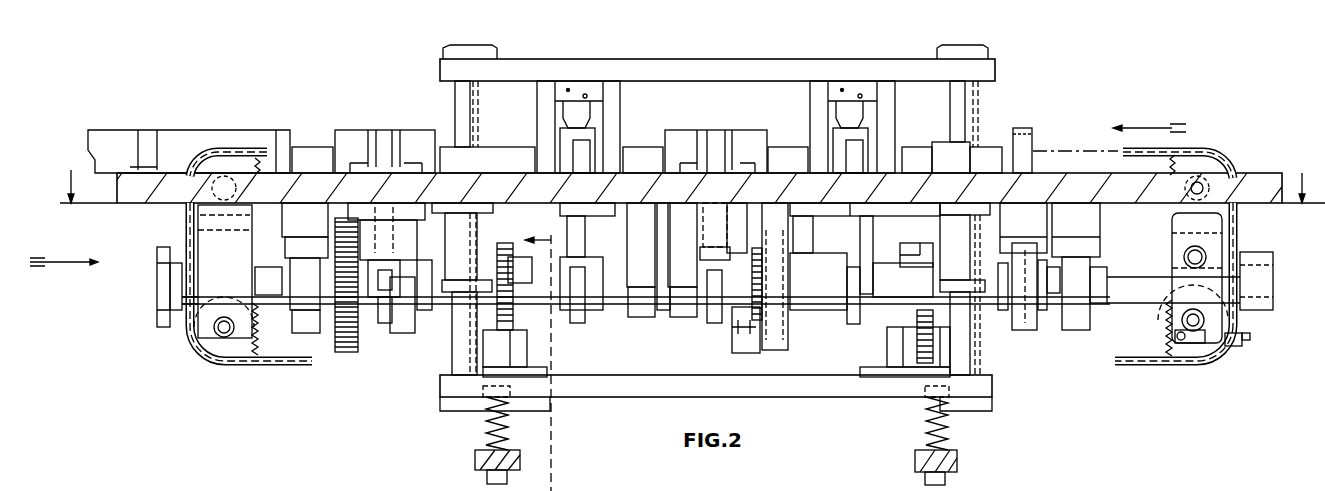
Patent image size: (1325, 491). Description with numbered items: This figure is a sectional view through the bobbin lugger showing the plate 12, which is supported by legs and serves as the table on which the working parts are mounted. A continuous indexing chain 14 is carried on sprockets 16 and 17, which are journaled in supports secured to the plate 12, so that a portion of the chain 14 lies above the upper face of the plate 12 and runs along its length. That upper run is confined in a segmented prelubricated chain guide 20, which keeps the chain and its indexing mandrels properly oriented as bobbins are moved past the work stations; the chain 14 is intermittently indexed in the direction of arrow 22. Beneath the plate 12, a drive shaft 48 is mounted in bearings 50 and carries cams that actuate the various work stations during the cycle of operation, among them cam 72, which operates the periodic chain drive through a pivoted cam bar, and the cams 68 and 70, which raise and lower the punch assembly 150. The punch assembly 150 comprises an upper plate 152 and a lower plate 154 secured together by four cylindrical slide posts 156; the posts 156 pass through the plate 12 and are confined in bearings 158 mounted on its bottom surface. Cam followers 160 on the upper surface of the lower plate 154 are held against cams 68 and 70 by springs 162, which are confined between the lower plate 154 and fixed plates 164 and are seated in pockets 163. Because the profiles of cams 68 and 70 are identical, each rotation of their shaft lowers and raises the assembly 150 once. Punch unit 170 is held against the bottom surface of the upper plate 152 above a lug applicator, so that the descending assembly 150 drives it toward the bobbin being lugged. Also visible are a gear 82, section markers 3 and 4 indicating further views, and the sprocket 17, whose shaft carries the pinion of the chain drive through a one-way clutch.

The section line 3- 3 is at (686, 186).
The direction arrow 4 is at (64, 278).
The plate 12 is at (1258, 178).
The continuous indexing chain 14 is at (1155, 366).
The sprockets 16 is at (235, 160).
The sprocket 17 is at (223, 352).
The segmented prelubricated chain guide 20 is at (535, 354).
The arrow 22 is at (1131, 128).
The drive shaft 48 is at (805, 298).
The bearings 50 is at (1070, 326).
The cam 68 is at (512, 322).
The cam 70 is at (920, 244).
The cam 72 is at (157, 302).
The gear 82 is at (349, 355).
The punch assembly 150 is at (1000, 53).
The upper plate 152 is at (778, 59).
The lower plate 154 is at (610, 393).
The cylindrical slide posts 156 is at (455, 98).
The bearings 158 is at (450, 290).
The cam followers 160 is at (808, 93).
The springs 162 is at (520, 425).
The pockets 163 is at (490, 436).
The fixed plates 164 is at (520, 459).
The punch unit 170 is at (625, 98).